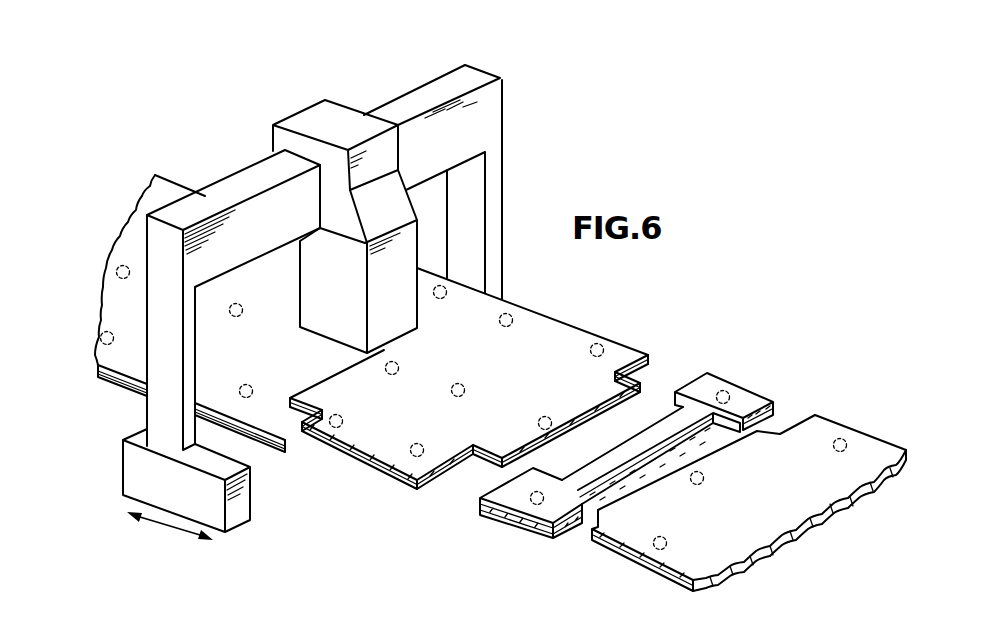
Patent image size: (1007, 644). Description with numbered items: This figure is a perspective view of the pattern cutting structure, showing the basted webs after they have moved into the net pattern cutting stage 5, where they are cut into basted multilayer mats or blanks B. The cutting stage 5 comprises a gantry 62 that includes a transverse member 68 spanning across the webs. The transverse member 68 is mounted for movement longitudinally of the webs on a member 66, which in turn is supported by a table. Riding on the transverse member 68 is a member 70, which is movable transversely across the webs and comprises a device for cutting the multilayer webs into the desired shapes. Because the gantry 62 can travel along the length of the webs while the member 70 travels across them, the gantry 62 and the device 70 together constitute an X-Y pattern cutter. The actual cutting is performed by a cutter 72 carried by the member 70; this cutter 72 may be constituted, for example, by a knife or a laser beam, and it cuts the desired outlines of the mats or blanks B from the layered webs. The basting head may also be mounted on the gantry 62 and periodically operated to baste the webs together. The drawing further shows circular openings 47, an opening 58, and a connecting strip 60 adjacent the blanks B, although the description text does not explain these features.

The net pattern cutting stage 5 is at (483, 55).
The locating holes 47 is at (237, 317).
The alignment hole 58 is at (415, 459).
The connector strip 60 is at (531, 497).
The gantry 62 is at (505, 79).
The member 66 is at (239, 518).
The transverse member 68 is at (226, 179).
The member 70 is at (331, 107).
The cutter 72 is at (378, 350).
The basted multilayer mats or blanks B is at (528, 393).